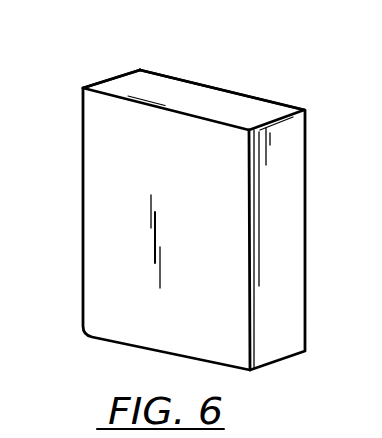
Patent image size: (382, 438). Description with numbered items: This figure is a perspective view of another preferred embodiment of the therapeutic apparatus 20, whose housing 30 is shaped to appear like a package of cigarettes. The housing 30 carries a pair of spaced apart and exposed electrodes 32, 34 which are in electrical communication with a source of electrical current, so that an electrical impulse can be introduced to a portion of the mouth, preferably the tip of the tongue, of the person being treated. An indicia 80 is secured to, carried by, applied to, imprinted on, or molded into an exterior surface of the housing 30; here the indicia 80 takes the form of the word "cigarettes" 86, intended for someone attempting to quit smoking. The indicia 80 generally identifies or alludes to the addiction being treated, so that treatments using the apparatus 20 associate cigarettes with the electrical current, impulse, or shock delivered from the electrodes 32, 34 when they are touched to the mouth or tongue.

The therapeutic apparatus 20 is at (128, 355).
The housing 30 is at (160, 252).
The electrode 32 is at (185, 88).
The electrode 34 is at (208, 93).
The indicia 80 is at (271, 106).
The word "cigarettes" 86 is at (139, 95).